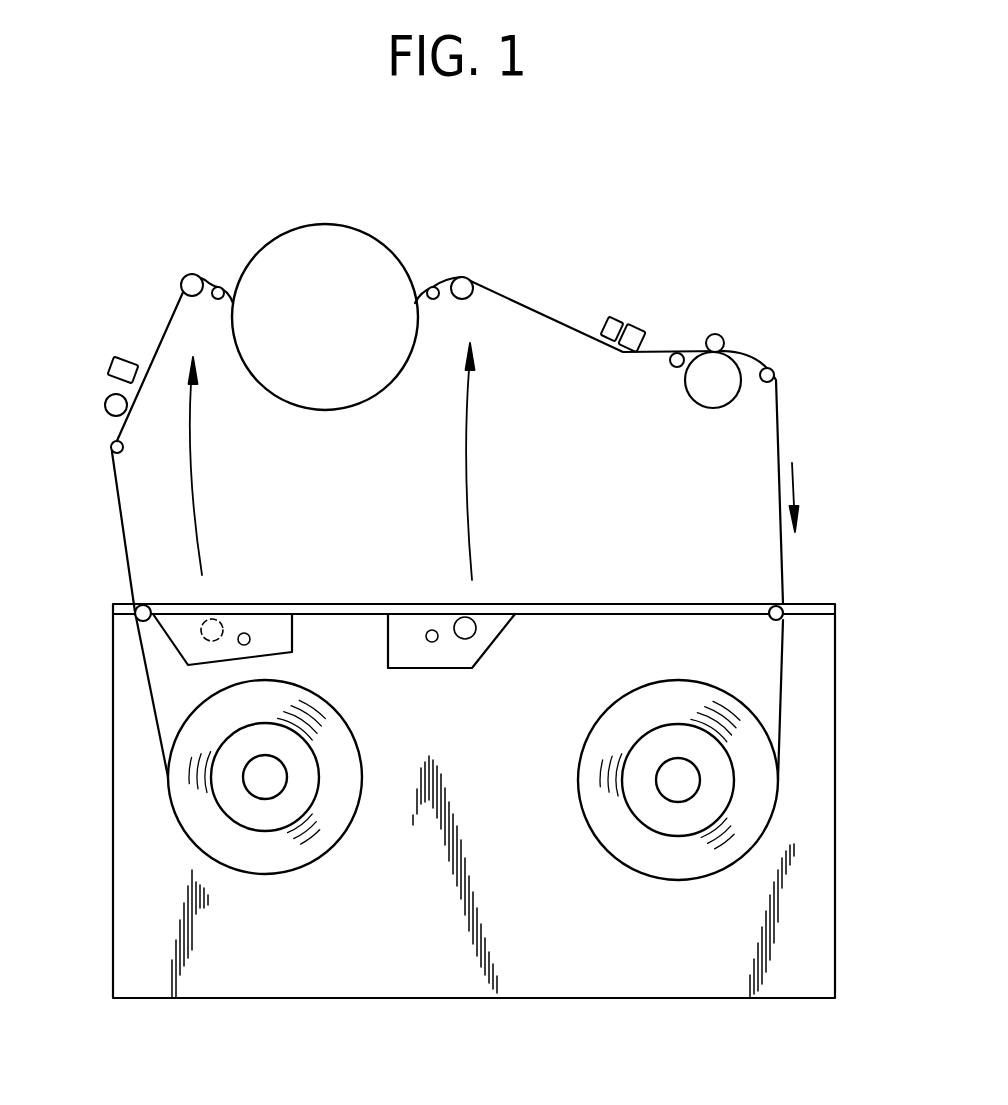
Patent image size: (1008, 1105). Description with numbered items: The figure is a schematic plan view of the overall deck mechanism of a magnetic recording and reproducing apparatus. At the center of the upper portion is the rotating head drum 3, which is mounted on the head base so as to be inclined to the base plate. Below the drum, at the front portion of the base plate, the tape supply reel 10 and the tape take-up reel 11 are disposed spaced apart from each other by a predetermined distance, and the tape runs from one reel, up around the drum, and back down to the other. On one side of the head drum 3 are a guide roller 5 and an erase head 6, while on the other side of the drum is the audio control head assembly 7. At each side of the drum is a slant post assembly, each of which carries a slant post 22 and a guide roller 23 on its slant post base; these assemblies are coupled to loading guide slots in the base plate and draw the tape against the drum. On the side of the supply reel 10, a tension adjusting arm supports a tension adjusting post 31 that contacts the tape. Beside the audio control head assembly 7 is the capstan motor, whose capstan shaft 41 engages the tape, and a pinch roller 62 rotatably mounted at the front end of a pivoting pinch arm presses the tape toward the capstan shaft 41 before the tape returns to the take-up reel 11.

The rotating head drum 3 is at (323, 230).
The guide roller 5 is at (110, 410).
The erase head 6 is at (108, 362).
The audio control head assembly 7 is at (625, 325).
The tape supply reel 10 is at (223, 800).
The tape take-up reel 11 is at (712, 808).
The slant post 22 is at (218, 287).
The guide roller 23 is at (190, 278).
The tension adjusting post 31 is at (112, 449).
The capstan shaft 41 is at (718, 336).
The pinch roller 62 is at (702, 398).